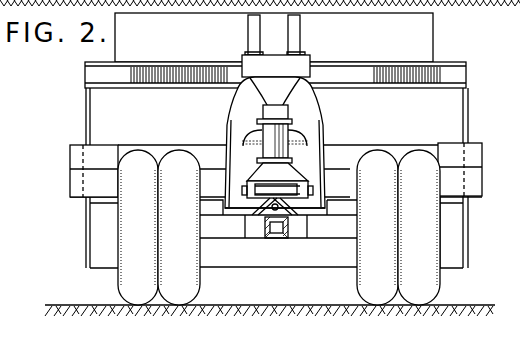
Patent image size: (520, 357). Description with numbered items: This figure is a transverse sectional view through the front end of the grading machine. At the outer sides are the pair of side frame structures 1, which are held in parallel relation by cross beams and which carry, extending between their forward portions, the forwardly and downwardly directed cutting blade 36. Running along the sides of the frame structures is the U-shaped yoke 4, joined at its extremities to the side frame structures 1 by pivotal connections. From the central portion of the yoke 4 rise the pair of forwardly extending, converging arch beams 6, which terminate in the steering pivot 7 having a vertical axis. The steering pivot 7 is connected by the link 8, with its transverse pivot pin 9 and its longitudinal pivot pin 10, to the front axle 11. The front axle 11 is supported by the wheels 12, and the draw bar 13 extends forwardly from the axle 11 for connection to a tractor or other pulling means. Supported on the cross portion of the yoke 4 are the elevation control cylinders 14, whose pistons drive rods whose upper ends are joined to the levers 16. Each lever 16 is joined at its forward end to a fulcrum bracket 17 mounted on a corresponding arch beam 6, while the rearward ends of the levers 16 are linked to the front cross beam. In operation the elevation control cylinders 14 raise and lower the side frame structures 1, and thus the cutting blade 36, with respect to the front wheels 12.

The side frame structures 1 is at (84, 95).
The U-shaped yoke 4 is at (77, 141).
The arch beams 6 is at (240, 109).
The steering pivot 7 is at (310, 131).
The link 8 is at (258, 205).
The transverse pivot pin 9 is at (317, 197).
The longitudinal pivot pin 10 is at (295, 210).
The front axle 11 is at (214, 227).
The wheels 12 is at (179, 277).
The draw bar 13 is at (268, 237).
The elevation control cylinders 14 is at (247, 54).
The levers 16 is at (291, 30).
The fulcrum bracket 17 is at (300, 67).
The cutting blade 36 is at (219, 260).